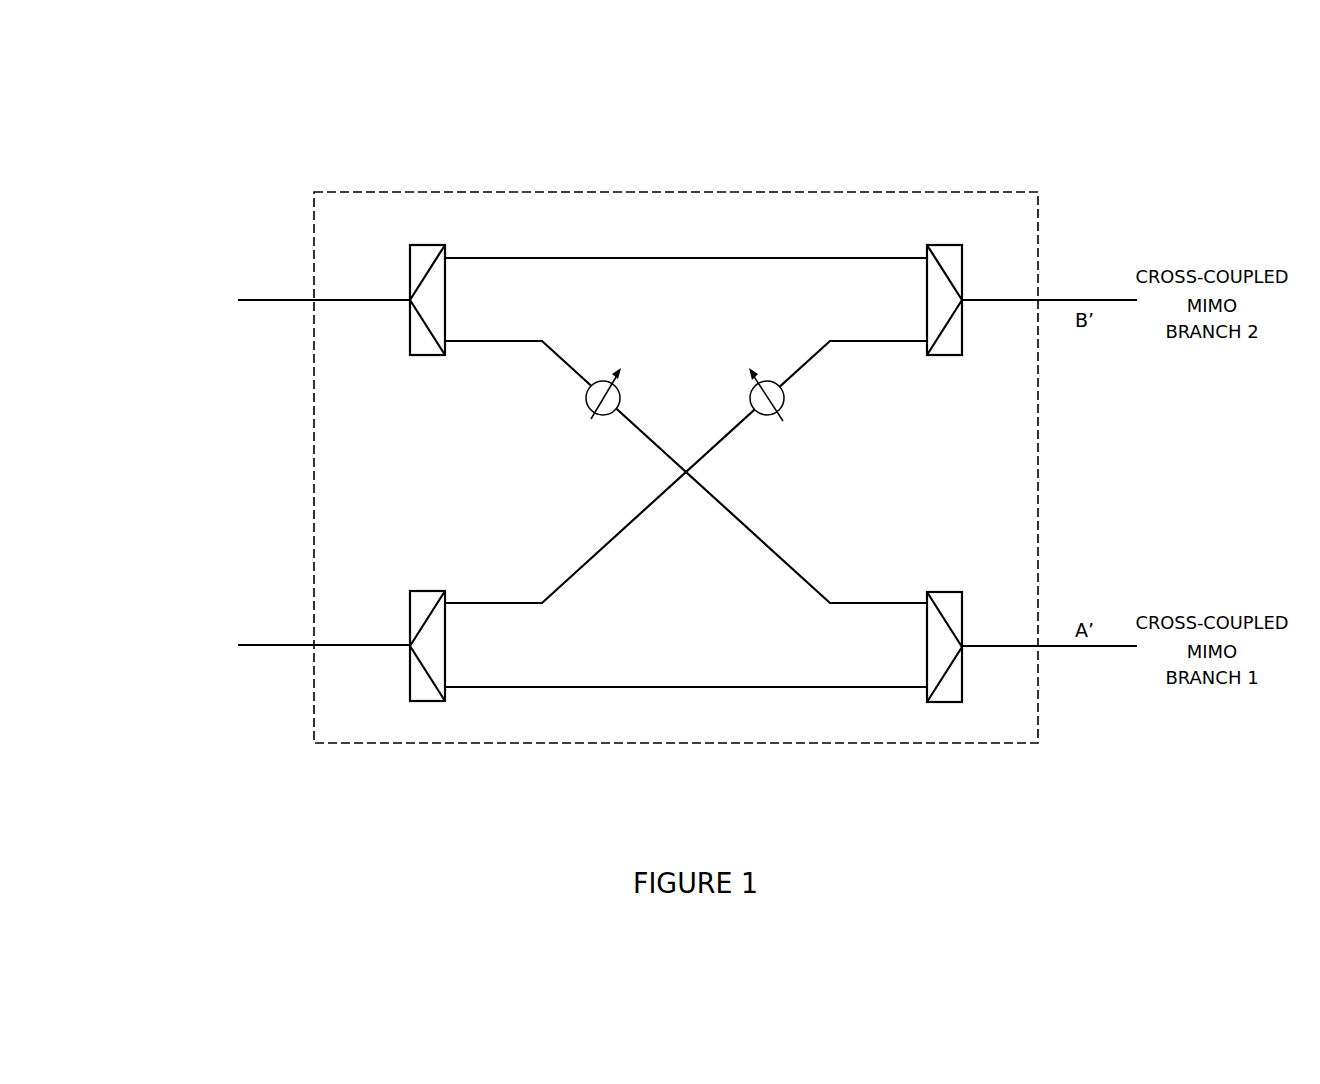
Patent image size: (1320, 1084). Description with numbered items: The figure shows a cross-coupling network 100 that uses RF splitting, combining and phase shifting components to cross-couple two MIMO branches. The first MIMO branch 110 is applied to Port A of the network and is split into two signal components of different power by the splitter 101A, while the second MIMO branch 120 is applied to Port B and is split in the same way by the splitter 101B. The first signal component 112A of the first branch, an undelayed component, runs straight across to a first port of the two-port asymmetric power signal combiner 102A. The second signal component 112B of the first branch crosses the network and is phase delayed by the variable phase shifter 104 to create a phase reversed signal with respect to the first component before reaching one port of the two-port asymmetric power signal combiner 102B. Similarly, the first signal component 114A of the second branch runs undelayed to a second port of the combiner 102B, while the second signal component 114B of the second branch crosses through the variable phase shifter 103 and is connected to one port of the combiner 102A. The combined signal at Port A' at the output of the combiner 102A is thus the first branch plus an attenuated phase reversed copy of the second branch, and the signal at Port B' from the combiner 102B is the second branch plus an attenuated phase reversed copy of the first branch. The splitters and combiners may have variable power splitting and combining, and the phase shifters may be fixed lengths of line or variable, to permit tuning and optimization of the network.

The cross-coupling network 100 is at (750, 191).
The splitter 101A is at (435, 703).
The splitter 101B is at (432, 245).
The 2-port asymmetric power signal combiner 102A is at (945, 703).
The 2-port asymmetric power signal combiner 102B is at (947, 243).
The variable phase shifter 103 is at (606, 418).
The variable phase shifter 104 is at (768, 418).
The MIMO Branch 1 110 is at (298, 647).
The MIMO Branch 2 120 is at (297, 298).
The first signal component of MIMO Branch 1 112A is at (558, 690).
The second signal component of MIMO Branch 1 112B is at (521, 600).
The first signal component of MIMO Branch 2 114A is at (563, 257).
The second signal component of MIMO Branch 2 114B is at (513, 345).